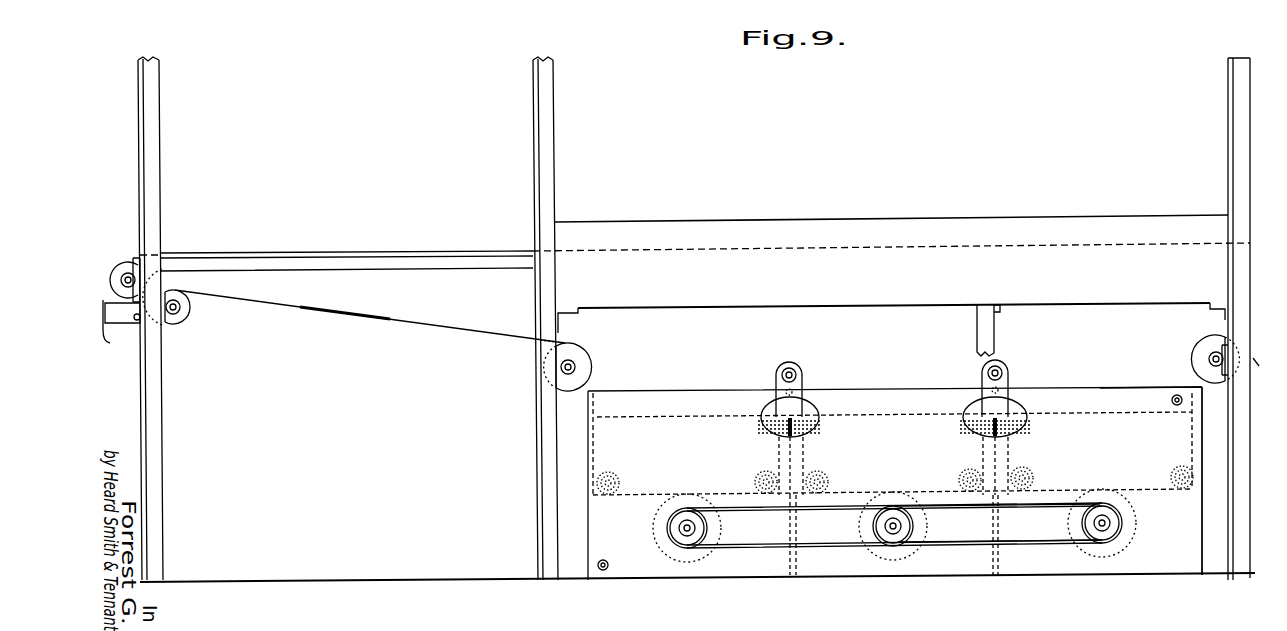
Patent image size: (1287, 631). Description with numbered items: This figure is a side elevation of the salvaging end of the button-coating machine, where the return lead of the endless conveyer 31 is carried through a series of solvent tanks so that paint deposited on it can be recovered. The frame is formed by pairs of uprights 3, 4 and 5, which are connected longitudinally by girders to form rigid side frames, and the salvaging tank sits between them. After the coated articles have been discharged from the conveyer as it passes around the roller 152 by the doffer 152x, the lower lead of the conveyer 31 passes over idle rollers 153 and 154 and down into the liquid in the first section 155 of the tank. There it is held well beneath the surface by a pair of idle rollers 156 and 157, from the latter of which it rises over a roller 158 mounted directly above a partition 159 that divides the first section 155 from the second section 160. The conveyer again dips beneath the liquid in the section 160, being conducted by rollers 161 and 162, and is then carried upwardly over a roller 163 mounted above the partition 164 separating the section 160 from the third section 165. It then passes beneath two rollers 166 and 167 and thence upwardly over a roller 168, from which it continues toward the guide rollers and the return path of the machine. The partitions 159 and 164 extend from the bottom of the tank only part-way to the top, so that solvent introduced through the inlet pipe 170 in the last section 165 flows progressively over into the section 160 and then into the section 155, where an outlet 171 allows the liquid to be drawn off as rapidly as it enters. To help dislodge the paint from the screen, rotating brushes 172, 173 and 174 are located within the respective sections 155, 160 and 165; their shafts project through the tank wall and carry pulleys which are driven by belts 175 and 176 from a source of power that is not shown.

The upright 3 is at (1236, 519).
The upright 4 is at (535, 494).
The upright 5 is at (160, 503).
The conveyer 31 is at (355, 254).
The roller 152 is at (122, 268).
The doffer 152x is at (120, 333).
The idle roller 153 is at (185, 312).
The idle roller 154 is at (585, 361).
The first section of tank 155 is at (690, 388).
The idle roller 156 is at (618, 472).
The idle roller 157 is at (757, 472).
The roller 158 is at (795, 362).
The partition 159 is at (805, 416).
The second section of tank 160 is at (871, 398).
The roller 161 is at (829, 472).
The roller 162 is at (960, 470).
The roller 163 is at (1000, 362).
The partition 164 is at (1012, 416).
The third section of tank 165 is at (1088, 395).
The roller 166 is at (1033, 469).
The roller 167 is at (1174, 468).
The roller 168 is at (1200, 350).
The inlet pipe 170 is at (1175, 406).
The outlet 171 is at (605, 571).
The rotating brush 172 is at (656, 519).
The rotating brush 173 is at (925, 527).
The rotating brush 174 is at (1132, 522).
The belt 175 is at (823, 510).
The belt 176 is at (1038, 508).